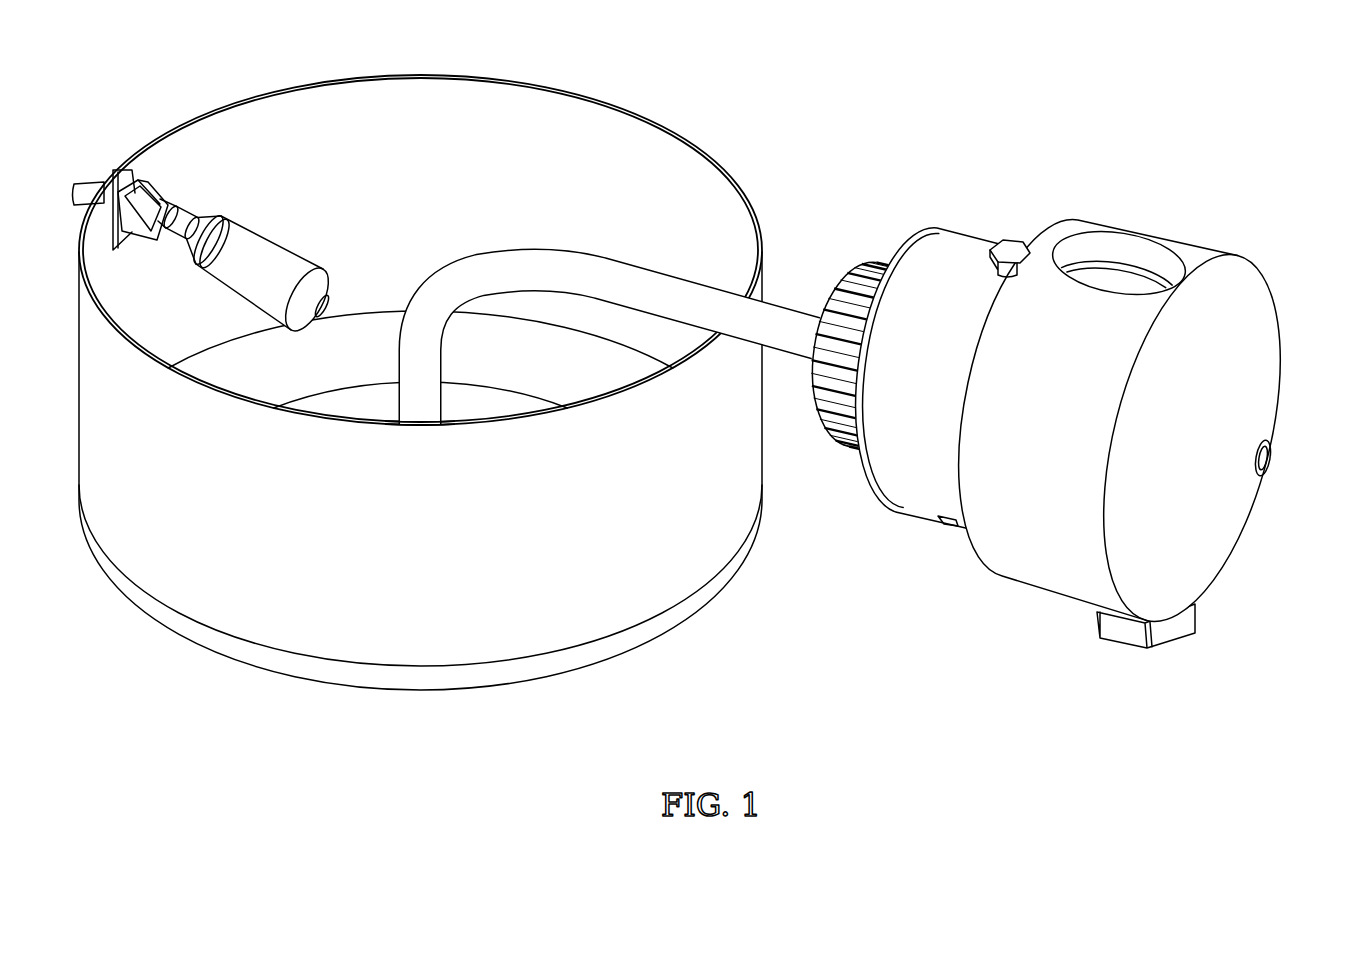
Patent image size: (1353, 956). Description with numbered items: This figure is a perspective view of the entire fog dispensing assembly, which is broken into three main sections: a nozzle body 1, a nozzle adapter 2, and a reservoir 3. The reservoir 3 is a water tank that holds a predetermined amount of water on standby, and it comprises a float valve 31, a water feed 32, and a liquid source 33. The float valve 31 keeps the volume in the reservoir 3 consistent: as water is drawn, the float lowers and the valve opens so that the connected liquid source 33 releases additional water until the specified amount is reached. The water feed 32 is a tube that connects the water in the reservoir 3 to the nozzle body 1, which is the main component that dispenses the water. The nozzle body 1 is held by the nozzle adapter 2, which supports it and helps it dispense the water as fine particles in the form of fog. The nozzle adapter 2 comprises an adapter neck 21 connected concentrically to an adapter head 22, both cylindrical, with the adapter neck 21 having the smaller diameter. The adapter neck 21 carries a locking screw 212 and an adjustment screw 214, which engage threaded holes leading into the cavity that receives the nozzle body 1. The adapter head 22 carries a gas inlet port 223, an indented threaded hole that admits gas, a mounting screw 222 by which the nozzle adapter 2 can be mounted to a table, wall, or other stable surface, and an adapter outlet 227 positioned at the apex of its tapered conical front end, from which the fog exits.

The nozzle body 1 is at (875, 237).
The nozzle adapter 2 is at (1094, 406).
The reservoir 3 is at (362, 132).
The adapter neck 21 is at (920, 458).
The adapter head 22 is at (1038, 520).
The float valve 31 is at (240, 242).
The water feed 32 is at (598, 280).
The liquid source 33 is at (80, 187).
The locking screw 212 is at (942, 522).
The adjustment screw 214 is at (1010, 250).
The mounting screw 222 is at (1127, 637).
The gas inlet port 223 is at (1113, 243).
The adapter outlet 227 is at (1271, 458).